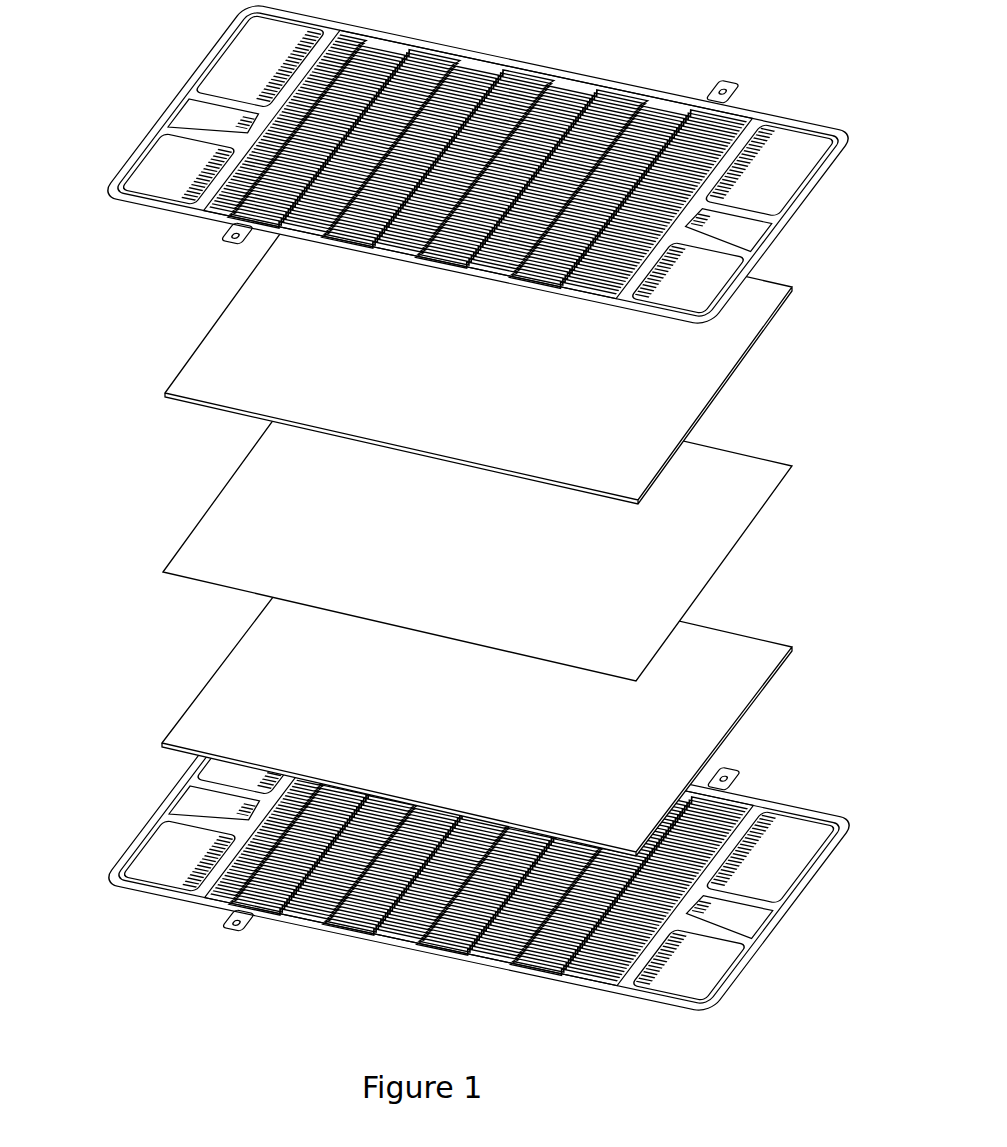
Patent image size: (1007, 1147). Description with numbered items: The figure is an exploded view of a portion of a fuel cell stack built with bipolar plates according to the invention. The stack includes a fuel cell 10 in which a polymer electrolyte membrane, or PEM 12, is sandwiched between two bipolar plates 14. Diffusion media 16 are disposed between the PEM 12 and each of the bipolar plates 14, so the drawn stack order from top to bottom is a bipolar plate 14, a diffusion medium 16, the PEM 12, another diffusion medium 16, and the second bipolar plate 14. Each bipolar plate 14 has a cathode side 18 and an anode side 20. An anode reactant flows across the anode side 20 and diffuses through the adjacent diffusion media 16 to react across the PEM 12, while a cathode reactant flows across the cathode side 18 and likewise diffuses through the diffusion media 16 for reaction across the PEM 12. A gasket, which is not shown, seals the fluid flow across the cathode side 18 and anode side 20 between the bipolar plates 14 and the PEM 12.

The fuel cell 10 is at (100, 156).
The polymer electrolyte membrane (PEM) 12 is at (727, 562).
The bipolar plate 14 is at (798, 234).
The diffusion media 16 is at (745, 362).
The cathode side 18 is at (600, 84).
The anode side 20 is at (455, 283).